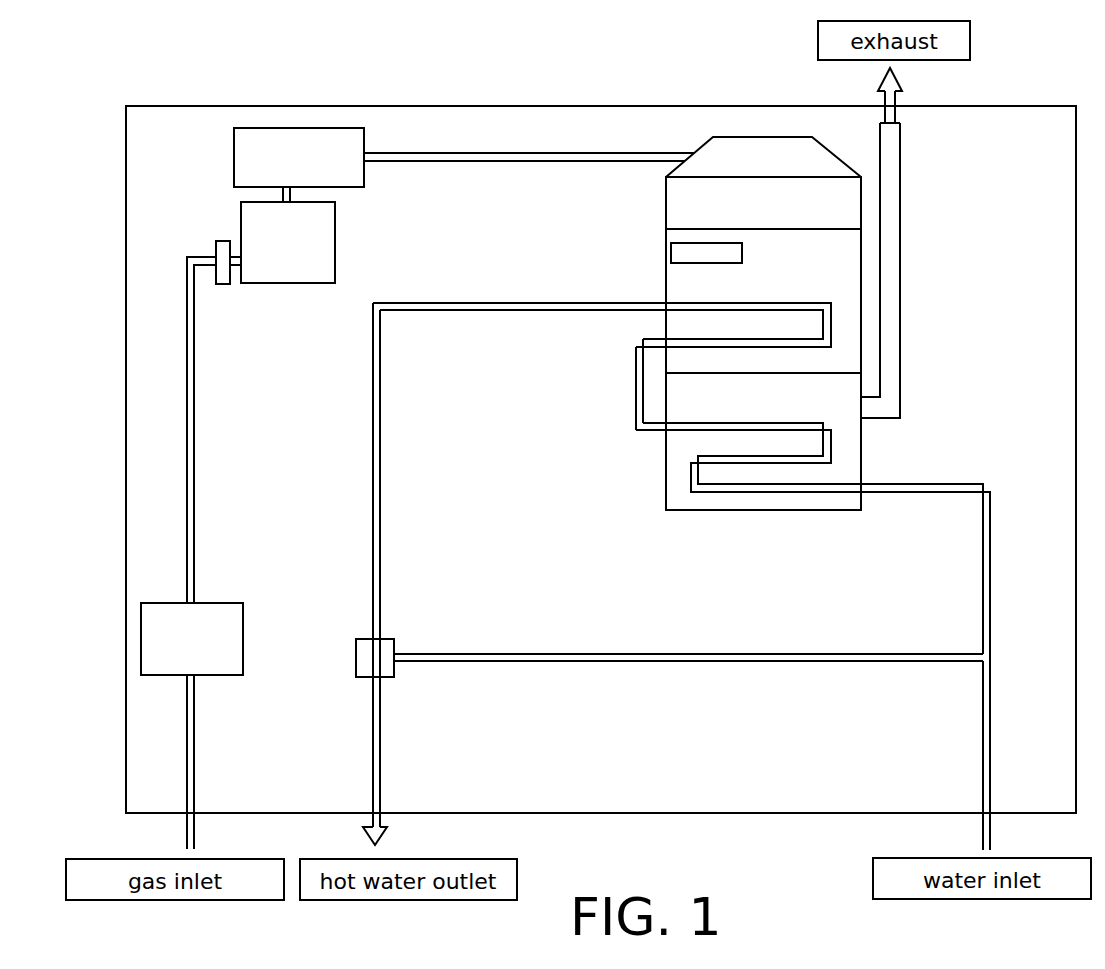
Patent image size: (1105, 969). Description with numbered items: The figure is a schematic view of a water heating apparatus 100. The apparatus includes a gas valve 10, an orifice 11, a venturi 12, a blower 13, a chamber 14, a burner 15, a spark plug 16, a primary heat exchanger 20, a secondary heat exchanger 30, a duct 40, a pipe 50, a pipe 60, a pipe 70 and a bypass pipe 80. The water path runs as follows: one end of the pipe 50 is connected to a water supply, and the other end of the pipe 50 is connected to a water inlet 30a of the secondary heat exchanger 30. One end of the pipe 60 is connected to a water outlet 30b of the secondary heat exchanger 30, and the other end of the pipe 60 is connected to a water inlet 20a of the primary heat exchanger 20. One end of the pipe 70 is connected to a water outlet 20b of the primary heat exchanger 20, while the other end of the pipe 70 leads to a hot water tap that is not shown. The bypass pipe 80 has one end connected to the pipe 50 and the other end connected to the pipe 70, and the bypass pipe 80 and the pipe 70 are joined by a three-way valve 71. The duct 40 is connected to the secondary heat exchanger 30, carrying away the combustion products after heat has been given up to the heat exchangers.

The water heating apparatus 100 is at (769, 83).
The gas valve 10 is at (245, 637).
The orifice 11 is at (222, 286).
The venturi 12 is at (337, 243).
The blower 13 is at (366, 138).
The chamber 14 is at (710, 138).
The burner 15 is at (665, 207).
The spark plug 16 is at (670, 253).
The primary heat exchanger 20 is at (665, 326).
The water inlet 20a is at (665, 346).
The water outlet 20b is at (665, 302).
The secondary heat exchanger 30 is at (665, 473).
The water inlet 30a is at (852, 494).
The water outlet 30b is at (673, 432).
The duct 40 is at (902, 323).
The pipe 50 is at (992, 596).
The pipe 60 is at (635, 388).
The pipe 70 is at (381, 515).
The three-way valve 71 is at (355, 665).
The bypass pipe 80 is at (816, 653).